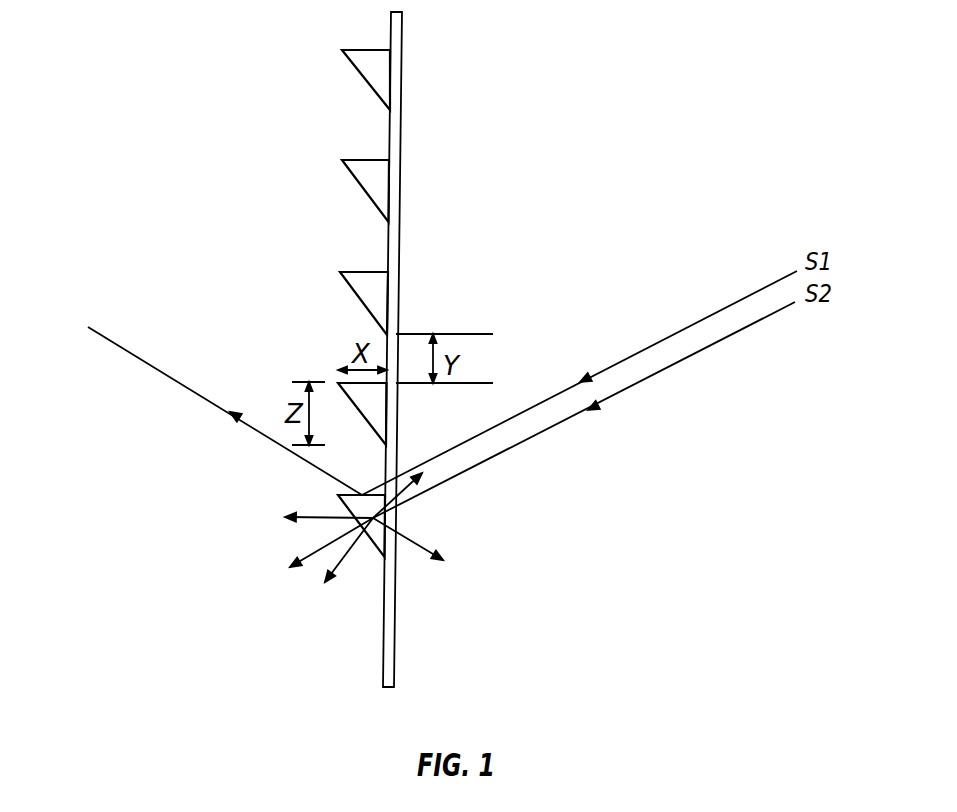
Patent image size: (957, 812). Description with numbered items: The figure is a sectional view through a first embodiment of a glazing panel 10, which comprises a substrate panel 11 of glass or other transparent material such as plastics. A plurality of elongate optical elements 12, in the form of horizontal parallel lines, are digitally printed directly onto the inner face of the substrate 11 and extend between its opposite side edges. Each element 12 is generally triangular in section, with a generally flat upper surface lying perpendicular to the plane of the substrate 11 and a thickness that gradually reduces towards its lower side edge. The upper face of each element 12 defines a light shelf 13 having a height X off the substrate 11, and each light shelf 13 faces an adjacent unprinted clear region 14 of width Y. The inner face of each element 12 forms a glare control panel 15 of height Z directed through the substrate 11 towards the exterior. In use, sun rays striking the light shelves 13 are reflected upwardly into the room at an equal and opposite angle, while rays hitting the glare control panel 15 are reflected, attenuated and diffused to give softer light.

The glazing panel 10 is at (385, 349).
The substrate panel 11 is at (393, 135).
The elongate optical element 12 is at (342, 81).
The light shelf 13 is at (368, 160).
The unprinted clear region 14 is at (388, 247).
The glare control panel 15 is at (388, 192).